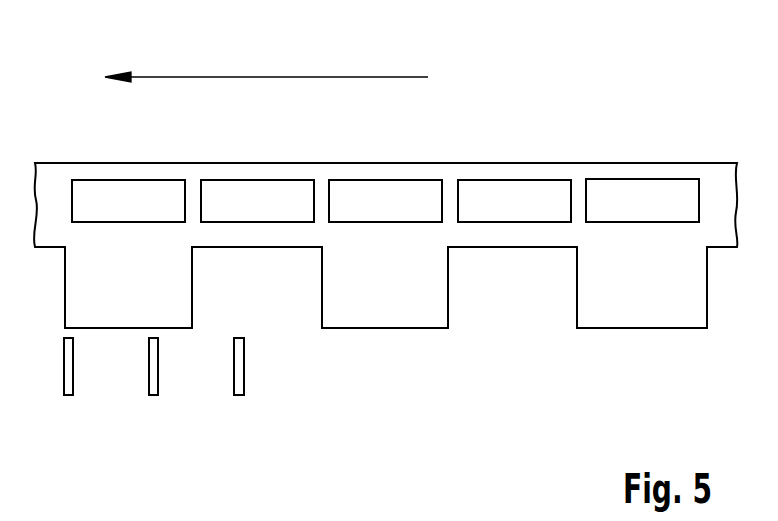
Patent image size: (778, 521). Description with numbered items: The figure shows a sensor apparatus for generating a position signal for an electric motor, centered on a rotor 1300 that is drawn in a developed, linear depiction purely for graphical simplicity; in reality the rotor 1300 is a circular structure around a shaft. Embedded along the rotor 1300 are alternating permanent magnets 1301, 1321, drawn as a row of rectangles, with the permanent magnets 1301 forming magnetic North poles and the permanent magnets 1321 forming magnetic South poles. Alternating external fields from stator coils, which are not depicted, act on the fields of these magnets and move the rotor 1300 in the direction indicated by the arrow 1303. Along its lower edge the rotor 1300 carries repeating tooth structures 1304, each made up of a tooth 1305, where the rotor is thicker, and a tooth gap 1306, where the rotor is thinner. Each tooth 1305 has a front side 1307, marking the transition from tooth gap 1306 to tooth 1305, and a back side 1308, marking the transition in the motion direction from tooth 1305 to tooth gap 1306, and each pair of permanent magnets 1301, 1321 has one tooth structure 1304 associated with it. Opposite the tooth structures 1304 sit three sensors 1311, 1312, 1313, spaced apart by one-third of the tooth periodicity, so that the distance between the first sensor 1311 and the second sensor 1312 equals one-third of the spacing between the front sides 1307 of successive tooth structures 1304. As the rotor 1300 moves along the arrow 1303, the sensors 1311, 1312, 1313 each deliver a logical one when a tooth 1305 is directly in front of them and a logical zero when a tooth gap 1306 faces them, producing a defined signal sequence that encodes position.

The rotor 1300 is at (722, 192).
The permanent magnets 1301 is at (130, 192).
The permanent magnets 1321 is at (259, 192).
The arrow 1303 is at (266, 77).
The tooth structure 1304 is at (493, 337).
The tooth 1305 is at (388, 310).
The tooth gap 1306 is at (538, 298).
The front side 1307 is at (321, 330).
The back side 1308 is at (448, 330).
The first sensor 1311 is at (70, 397).
The second sensor 1312 is at (155, 397).
The third sensor 1313 is at (239, 397).